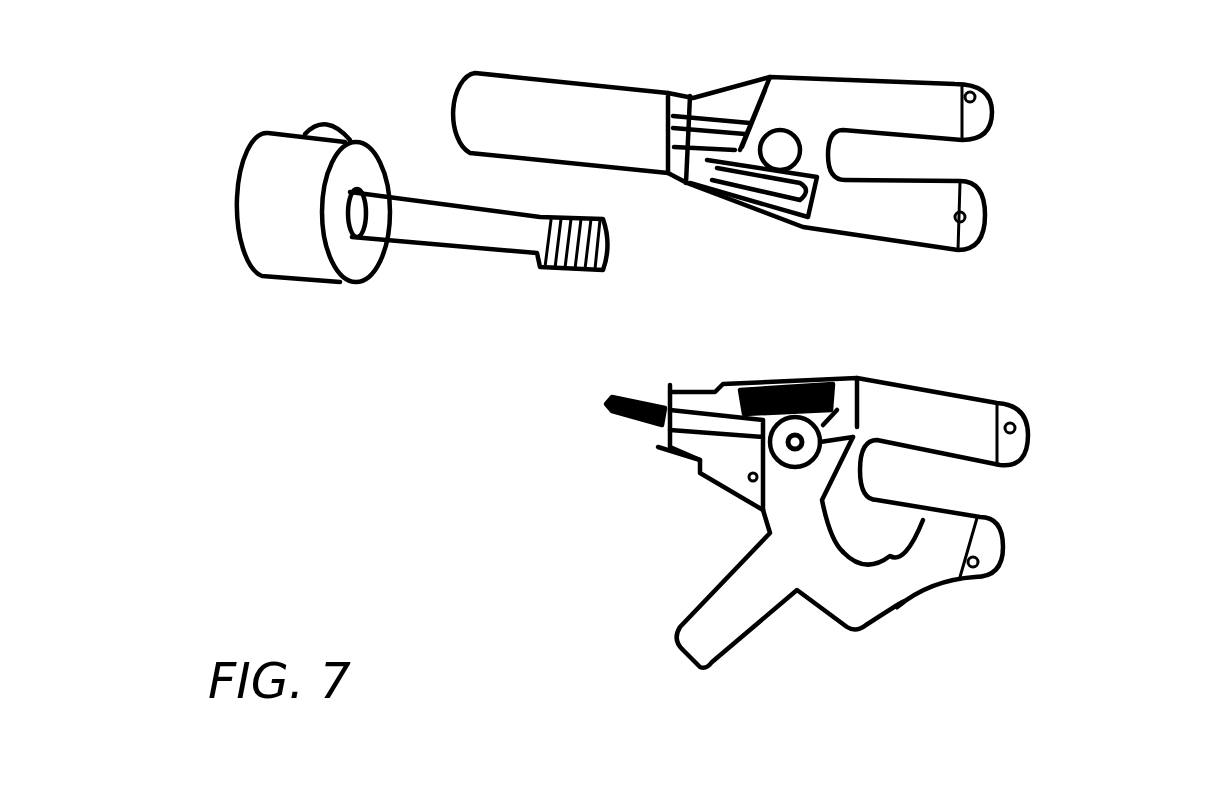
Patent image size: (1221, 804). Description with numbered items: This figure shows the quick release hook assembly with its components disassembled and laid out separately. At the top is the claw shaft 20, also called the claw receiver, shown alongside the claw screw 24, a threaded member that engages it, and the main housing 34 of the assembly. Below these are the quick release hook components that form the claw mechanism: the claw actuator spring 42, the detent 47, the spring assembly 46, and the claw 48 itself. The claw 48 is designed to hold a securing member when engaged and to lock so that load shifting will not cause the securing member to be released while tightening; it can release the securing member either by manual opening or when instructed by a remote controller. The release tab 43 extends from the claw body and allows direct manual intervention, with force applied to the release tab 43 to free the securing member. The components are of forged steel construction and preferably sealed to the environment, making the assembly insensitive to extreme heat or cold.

The claw shaft 20 is at (590, 77).
The claw screw 24 is at (450, 253).
The main housing 34 is at (280, 270).
The claw actuator spring 42 is at (712, 383).
The release tab 43 is at (740, 643).
The spring assembly 46 is at (653, 427).
The detent 47 is at (663, 443).
The claw 48 is at (943, 547).